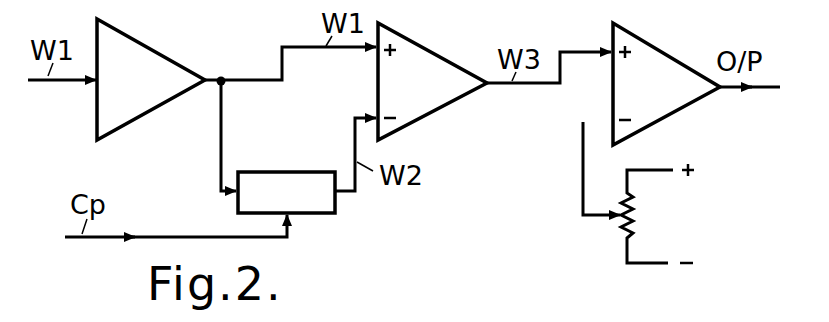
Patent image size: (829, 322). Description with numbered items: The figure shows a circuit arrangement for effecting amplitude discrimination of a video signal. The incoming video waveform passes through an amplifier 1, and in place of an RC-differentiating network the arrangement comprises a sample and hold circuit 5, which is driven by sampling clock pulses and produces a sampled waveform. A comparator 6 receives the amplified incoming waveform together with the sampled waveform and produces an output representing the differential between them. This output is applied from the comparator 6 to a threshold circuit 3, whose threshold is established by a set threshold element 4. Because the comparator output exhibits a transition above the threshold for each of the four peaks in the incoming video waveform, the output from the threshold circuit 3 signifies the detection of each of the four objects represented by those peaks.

The amplifier 1 is at (146, 48).
The comparator 6 is at (448, 58).
The threshold circuit 3 is at (661, 50).
The sample and hold circuit 5 is at (276, 171).
The set threshold element 4 is at (640, 196).